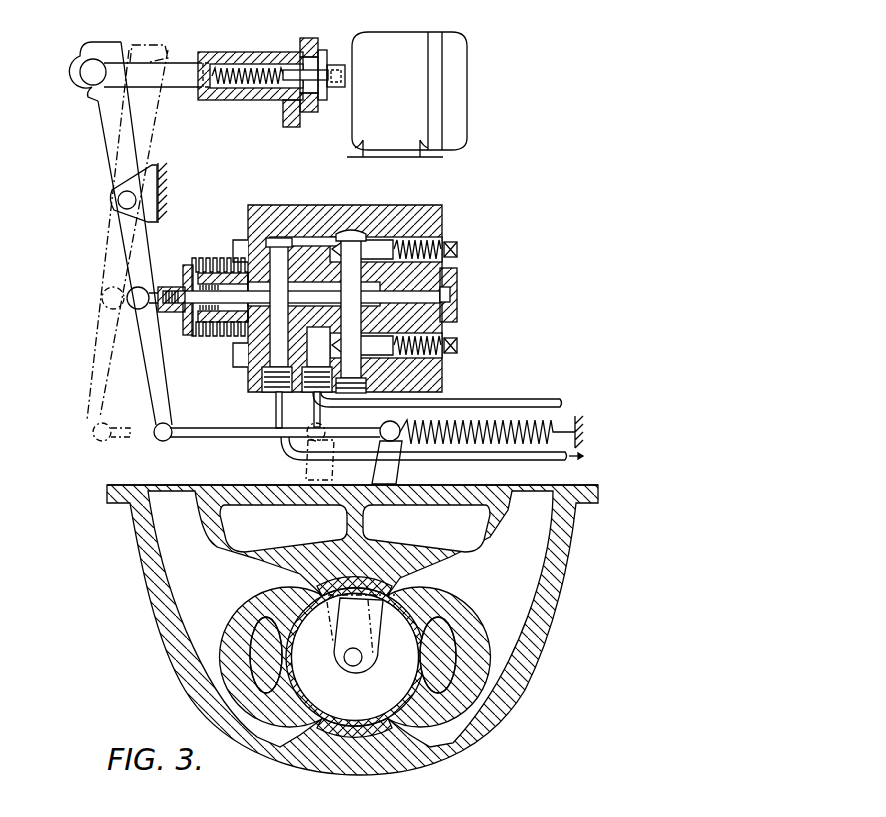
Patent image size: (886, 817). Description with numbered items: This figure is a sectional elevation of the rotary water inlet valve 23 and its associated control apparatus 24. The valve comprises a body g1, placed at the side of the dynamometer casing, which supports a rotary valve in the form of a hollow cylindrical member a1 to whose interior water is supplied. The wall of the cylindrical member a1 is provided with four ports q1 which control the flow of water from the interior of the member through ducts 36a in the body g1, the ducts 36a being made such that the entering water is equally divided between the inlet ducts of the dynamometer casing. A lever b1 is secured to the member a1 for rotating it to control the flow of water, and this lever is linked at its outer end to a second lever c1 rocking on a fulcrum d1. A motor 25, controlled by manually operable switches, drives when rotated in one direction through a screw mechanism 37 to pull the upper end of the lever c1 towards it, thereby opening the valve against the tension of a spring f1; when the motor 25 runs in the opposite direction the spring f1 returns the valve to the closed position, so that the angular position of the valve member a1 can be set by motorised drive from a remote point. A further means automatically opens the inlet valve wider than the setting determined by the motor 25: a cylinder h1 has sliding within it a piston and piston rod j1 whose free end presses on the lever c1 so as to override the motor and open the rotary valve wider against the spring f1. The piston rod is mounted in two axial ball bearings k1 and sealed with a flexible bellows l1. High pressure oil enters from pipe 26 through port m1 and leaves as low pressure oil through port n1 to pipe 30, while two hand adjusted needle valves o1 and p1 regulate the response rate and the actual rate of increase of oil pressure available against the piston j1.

The screw mechanism 37 is at (228, 52).
The motor 25 is at (438, 95).
The fulcrum d1 is at (150, 196).
The second lever c1 is at (155, 382).
The control apparatus 24 is at (448, 222).
The cylinder h1 is at (313, 278).
The flexible bellows l1 is at (214, 268).
The axial ball bearings k1 is at (213, 337).
The needle valve p1 is at (458, 250).
The needle valve o1 is at (458, 345).
The piston and piston rod j1 is at (344, 311).
The port n1 is at (267, 391).
The port m1 is at (311, 391).
The spring f1 is at (474, 428).
The pipe 26 is at (512, 401).
The pipe 30 is at (443, 455).
The lever b1 is at (387, 468).
The ducts 36a is at (177, 520).
The body g1 is at (513, 680).
The hollow cylindrical member a1 is at (407, 693).
The ports q1 is at (307, 618).
The water inlet valve 23 is at (420, 610).